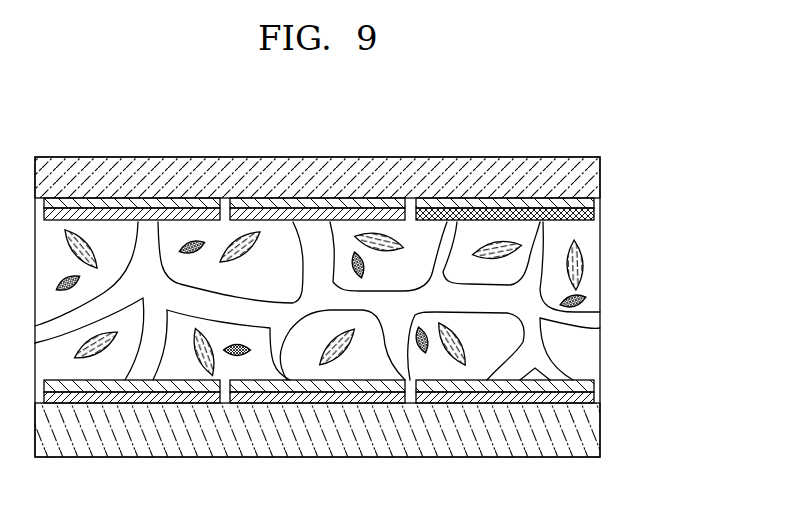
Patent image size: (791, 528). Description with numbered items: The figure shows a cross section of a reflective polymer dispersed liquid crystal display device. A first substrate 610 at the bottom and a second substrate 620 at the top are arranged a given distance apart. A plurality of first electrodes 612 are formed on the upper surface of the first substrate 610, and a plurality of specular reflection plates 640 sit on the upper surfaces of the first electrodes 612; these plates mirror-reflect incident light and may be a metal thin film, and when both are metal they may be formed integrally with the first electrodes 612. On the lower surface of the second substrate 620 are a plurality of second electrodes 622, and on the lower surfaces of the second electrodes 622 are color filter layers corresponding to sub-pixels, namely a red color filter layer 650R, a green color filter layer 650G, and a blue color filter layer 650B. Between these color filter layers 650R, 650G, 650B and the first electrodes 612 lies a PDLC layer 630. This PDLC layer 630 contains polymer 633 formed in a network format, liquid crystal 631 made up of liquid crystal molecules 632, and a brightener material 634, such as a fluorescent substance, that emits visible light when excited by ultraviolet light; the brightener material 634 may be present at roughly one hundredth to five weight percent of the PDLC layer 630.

The first substrate 610 is at (600, 427).
The first electrodes 612 is at (173, 396).
The second substrate 620 is at (600, 177).
The second electrodes 622 is at (600, 203).
The PDLC layer 630 is at (391, 301).
The liquid crystal 631 is at (598, 237).
The liquid crystal molecules 632 is at (582, 267).
The polymer 633 is at (597, 327).
The brightener material 634 is at (588, 299).
The specular reflection plates 640 is at (97, 388).
The red color filter layer 650R is at (137, 221).
The green color filter layer 650G is at (323, 221).
The blue color filter layer 650B is at (507, 215).